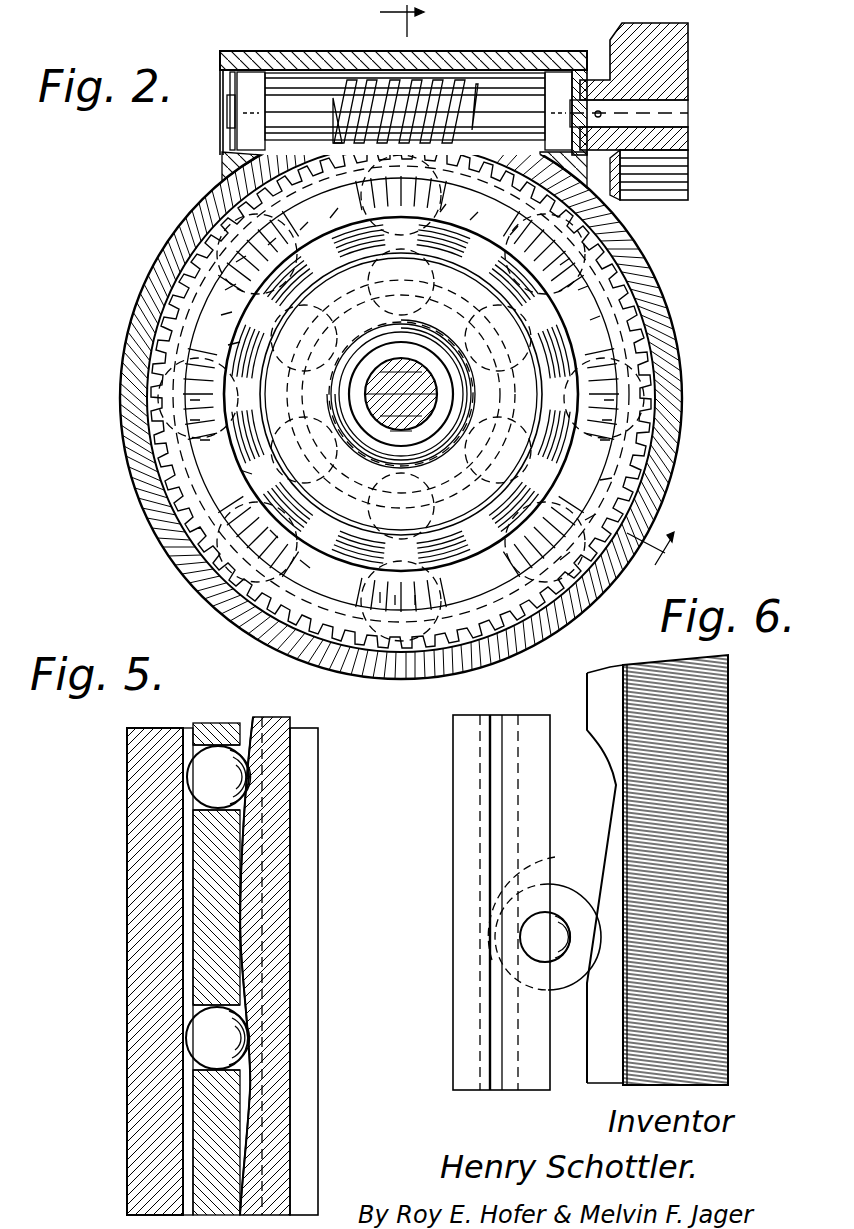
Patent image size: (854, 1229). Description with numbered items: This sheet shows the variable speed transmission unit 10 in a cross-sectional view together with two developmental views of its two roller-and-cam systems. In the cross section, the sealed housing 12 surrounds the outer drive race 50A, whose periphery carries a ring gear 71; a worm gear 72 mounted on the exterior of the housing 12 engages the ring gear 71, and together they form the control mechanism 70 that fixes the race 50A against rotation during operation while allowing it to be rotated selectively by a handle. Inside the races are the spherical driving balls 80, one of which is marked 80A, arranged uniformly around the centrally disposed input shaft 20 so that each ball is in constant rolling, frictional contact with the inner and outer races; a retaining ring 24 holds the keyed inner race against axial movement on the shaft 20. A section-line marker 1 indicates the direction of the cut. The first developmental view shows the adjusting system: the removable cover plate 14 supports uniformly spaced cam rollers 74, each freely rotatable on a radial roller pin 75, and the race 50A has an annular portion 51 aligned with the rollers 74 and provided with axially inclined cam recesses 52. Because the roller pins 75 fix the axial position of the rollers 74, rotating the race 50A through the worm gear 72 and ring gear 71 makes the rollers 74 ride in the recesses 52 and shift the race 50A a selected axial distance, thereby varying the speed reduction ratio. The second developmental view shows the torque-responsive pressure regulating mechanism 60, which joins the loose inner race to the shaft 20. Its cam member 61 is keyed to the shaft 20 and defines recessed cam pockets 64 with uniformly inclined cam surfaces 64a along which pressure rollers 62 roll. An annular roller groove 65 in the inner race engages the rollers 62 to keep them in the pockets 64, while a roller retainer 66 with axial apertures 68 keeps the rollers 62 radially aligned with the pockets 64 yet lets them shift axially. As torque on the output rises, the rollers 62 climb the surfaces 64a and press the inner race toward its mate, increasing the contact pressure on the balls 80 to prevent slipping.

In FIG. 2, the section line 1 is at (658, 554).
In FIG. 2, the variable speed transmission unit 10 is at (407, 342).
In FIG. 2, the sealed housing 12 is at (143, 315).
In FIG. 6, the removable cover plate 14 is at (462, 803).
In FIG. 2, the input shaft 20 is at (412, 380).
In FIG. 2, the retaining ring 24 is at (376, 361).
In FIG. 2, the outer drive race 50A is at (392, 398).
In FIG. 6, the annular portion 51 is at (573, 874).
In FIG. 6, the cam recesses 52 is at (613, 816).
In FIG. 5, the torque-responsive pressure regulating mechanism 60 is at (222, 945).
In FIG. 5, the cam member 61 is at (311, 916).
In FIG. 5, the pressure rollers 62 is at (218, 745).
In FIG. 5, the cam pockets 64 is at (318, 966).
In FIG. 5, the inclined cam surfaces 64a is at (256, 831).
In FIG. 5, the annular roller groove 65 is at (186, 860).
In FIG. 5, the roller retainer 66 is at (206, 1118).
In FIG. 5, the axial apertures 68 is at (193, 752).
In FIG. 2, the control mechanism 70 is at (451, 102).
In FIG. 6, the control mechanism 70 is at (709, 870).
In FIG. 2, the ring gear 71 is at (600, 251).
In FIG. 6, the ring gear 71 is at (731, 936).
In FIG. 2, the worm gear 72 is at (437, 80).
In FIG. 2, the cam rollers 74 is at (362, 181).
In FIG. 6, the cam rollers 74 is at (564, 890).
In FIG. 6, the radial roller pins 75 is at (530, 938).
In FIG. 2, the spherical driving balls 80 is at (232, 411).
In FIG. 2, the bearing ring 80A is at (401, 386).